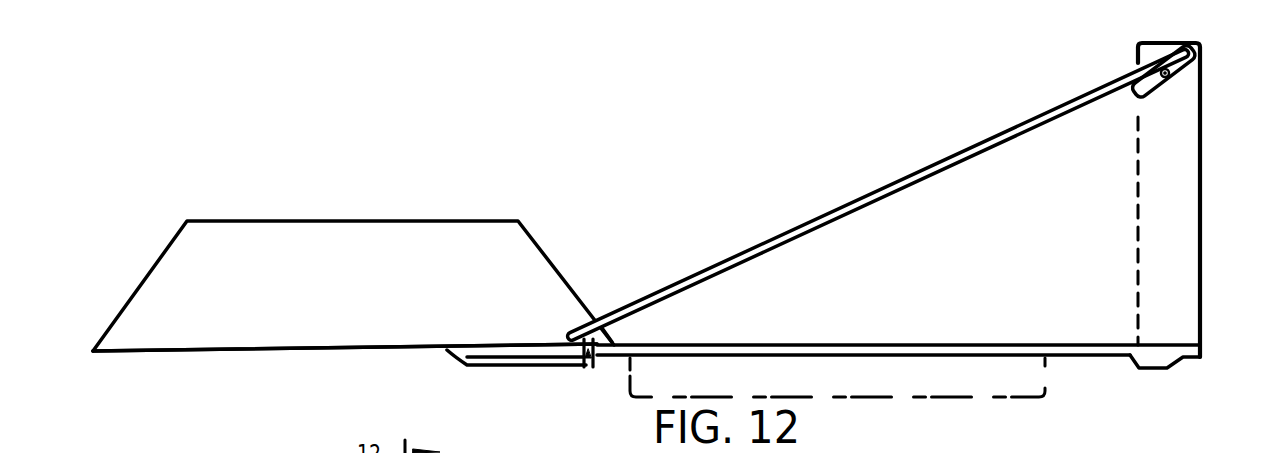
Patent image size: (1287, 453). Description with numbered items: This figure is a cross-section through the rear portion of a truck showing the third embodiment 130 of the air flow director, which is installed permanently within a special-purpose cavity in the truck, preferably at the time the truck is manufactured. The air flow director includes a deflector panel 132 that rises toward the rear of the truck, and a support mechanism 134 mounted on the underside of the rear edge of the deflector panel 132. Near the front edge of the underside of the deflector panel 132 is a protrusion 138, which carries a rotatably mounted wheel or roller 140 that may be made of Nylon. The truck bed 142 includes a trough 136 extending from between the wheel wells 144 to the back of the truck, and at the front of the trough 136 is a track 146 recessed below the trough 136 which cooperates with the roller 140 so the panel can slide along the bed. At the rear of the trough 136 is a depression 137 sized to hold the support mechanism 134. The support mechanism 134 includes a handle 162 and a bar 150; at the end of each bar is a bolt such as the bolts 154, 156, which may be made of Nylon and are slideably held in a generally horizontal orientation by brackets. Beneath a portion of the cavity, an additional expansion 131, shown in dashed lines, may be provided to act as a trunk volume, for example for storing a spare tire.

The third embodiment 130 is at (795, 167).
The additional expansion 131 is at (975, 400).
The deflector panel 132 is at (900, 178).
The support mechanism 134 is at (1175, 95).
The trough 136 is at (877, 344).
The depression 137 is at (1170, 368).
The protrusion 138 is at (610, 336).
The roller 140 is at (592, 366).
The truck bed 142 is at (277, 349).
The wheel wells 144 is at (388, 219).
The track 146 is at (522, 367).
The bar 150 is at (1150, 69).
The bolt 154 is at (285, 439).
The bolt 156 is at (1134, 445).
The handle 162 is at (1204, 74).